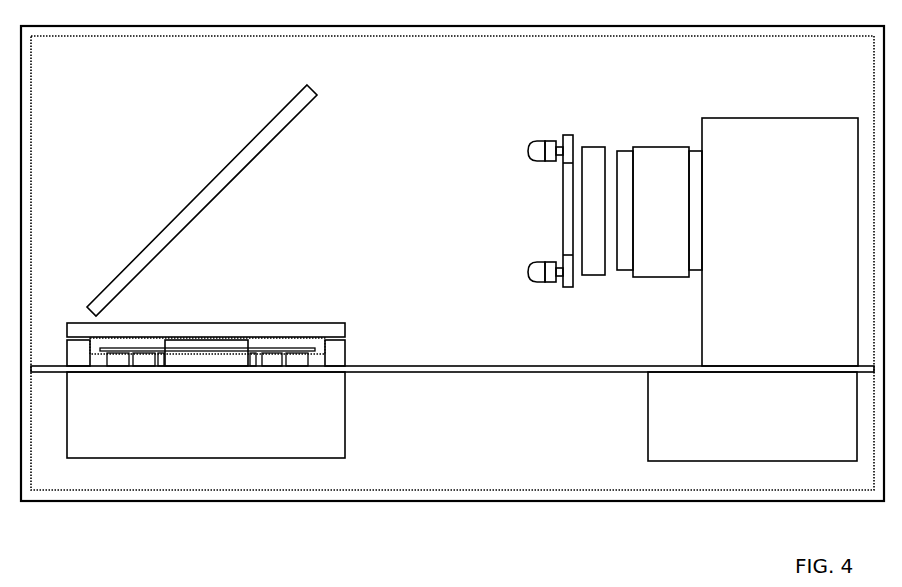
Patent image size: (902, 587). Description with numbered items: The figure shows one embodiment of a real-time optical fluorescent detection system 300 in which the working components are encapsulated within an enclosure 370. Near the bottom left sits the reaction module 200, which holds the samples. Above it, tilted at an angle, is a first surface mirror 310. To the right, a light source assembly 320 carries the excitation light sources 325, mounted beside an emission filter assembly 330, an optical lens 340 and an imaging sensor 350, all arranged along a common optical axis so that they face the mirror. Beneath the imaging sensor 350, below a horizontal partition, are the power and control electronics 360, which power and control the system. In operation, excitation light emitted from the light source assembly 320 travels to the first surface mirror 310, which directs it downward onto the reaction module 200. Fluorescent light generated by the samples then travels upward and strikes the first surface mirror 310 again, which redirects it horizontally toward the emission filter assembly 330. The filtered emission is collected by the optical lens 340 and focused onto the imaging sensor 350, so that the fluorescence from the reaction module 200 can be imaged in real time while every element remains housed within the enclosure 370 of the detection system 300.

The reaction module 200 is at (352, 346).
The imaging system 300 is at (247, 521).
The first surface mirror 310 is at (198, 193).
The light source assembly 320 is at (567, 135).
The light sources (LEDs) 325 is at (528, 150).
The emission filter assembly 330 is at (593, 277).
The optical lens 340 is at (660, 148).
The imaging sensor 350 is at (780, 118).
The power and control electronics 360 is at (648, 444).
The enclosure 370 is at (472, 490).